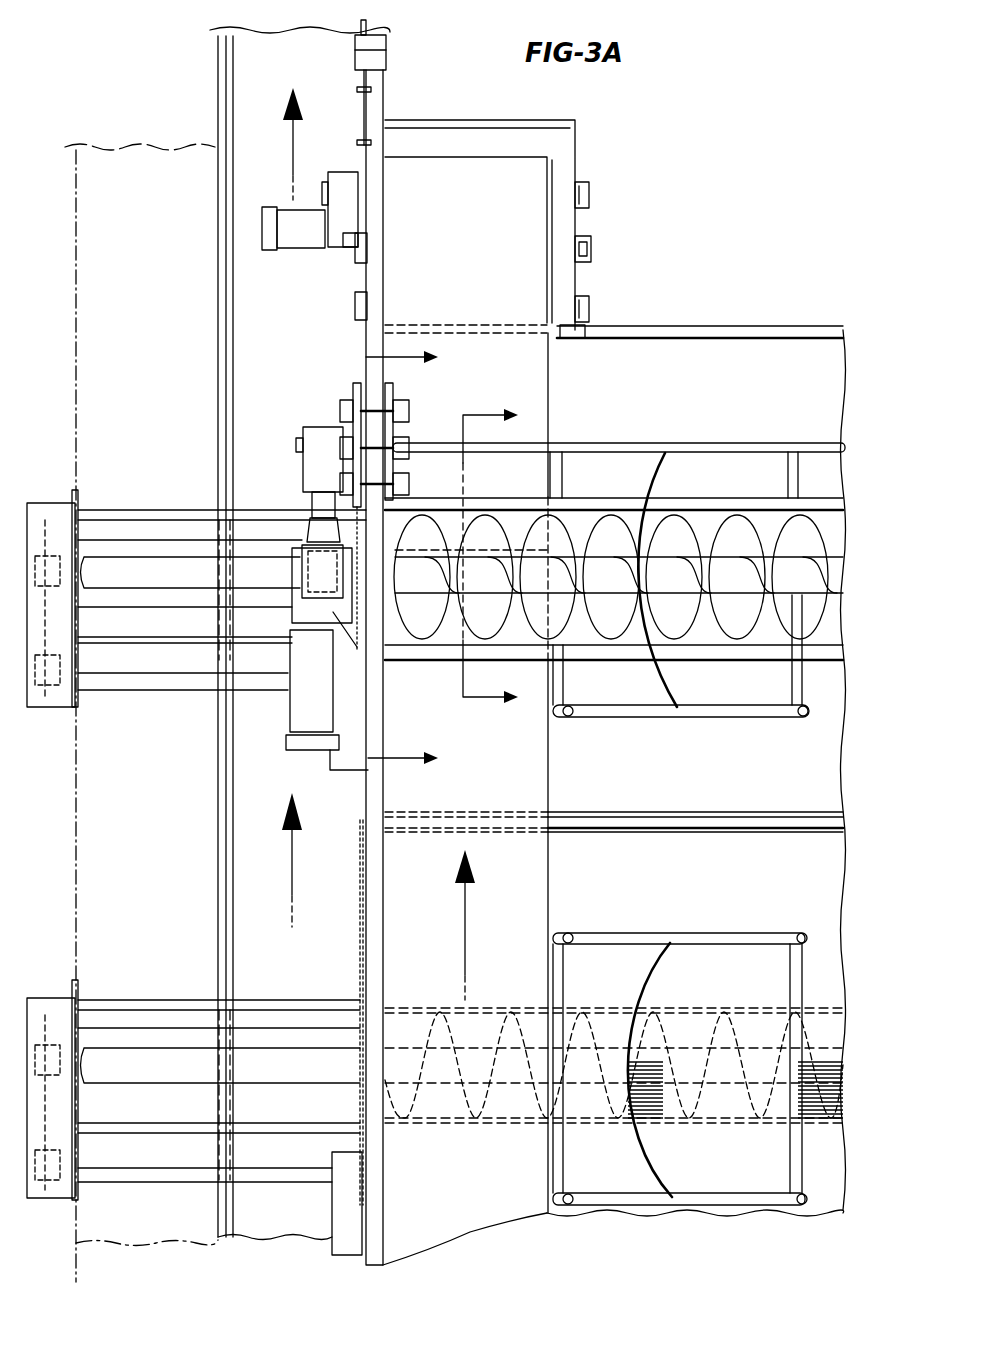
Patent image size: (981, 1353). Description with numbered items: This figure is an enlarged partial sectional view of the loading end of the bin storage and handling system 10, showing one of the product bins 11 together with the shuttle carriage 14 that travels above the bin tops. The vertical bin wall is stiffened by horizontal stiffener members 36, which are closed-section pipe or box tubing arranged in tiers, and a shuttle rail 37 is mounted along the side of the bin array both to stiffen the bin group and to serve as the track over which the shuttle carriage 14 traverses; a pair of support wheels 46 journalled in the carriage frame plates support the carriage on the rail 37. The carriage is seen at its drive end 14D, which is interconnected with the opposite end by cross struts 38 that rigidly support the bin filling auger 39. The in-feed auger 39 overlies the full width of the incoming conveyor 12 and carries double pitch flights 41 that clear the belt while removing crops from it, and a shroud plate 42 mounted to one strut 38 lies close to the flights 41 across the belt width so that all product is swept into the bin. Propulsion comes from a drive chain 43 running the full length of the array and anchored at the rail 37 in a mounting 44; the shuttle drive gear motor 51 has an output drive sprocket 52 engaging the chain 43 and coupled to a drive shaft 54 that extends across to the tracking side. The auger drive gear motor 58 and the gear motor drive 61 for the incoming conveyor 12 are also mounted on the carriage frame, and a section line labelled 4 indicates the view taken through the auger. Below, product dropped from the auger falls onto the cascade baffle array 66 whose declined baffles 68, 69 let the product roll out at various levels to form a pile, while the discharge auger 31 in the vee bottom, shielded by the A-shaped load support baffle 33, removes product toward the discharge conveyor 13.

The bin 11 is at (664, 328).
The incoming conveyor 12 is at (509, 947).
The discharge conveyor 13 is at (268, 186).
The shuttle carriage 14 is at (292, 467).
The drive end 14D is at (357, 385).
The discharge auger 31 is at (725, 1017).
The load support baffle 33 is at (637, 1120).
The stiffener member 36 is at (713, 815).
The shuttle rail 37 is at (378, 107).
The cross strut 38 is at (760, 497).
The bin filling auger 39 is at (693, 533).
The flights 41 is at (540, 527).
The shroud plate 42 is at (468, 517).
The drive chain 43 is at (362, 123).
The mounting 44 is at (380, 55).
The support wheel 46 is at (365, 732).
The shuttle drive gear motor 51 is at (317, 430).
The output drive sprocket 52 is at (392, 462).
The drive shaft 54 is at (535, 445).
The auger drive gear motor 58 is at (290, 723).
The gear motor drive 61 is at (308, 240).
The cascade baffle array 66 is at (613, 728).
The baffle 68 is at (605, 550).
The baffle 69 is at (745, 549).
The bin storage and handling system 10 is at (441, 561).
The section line 4 is at (490, 556).